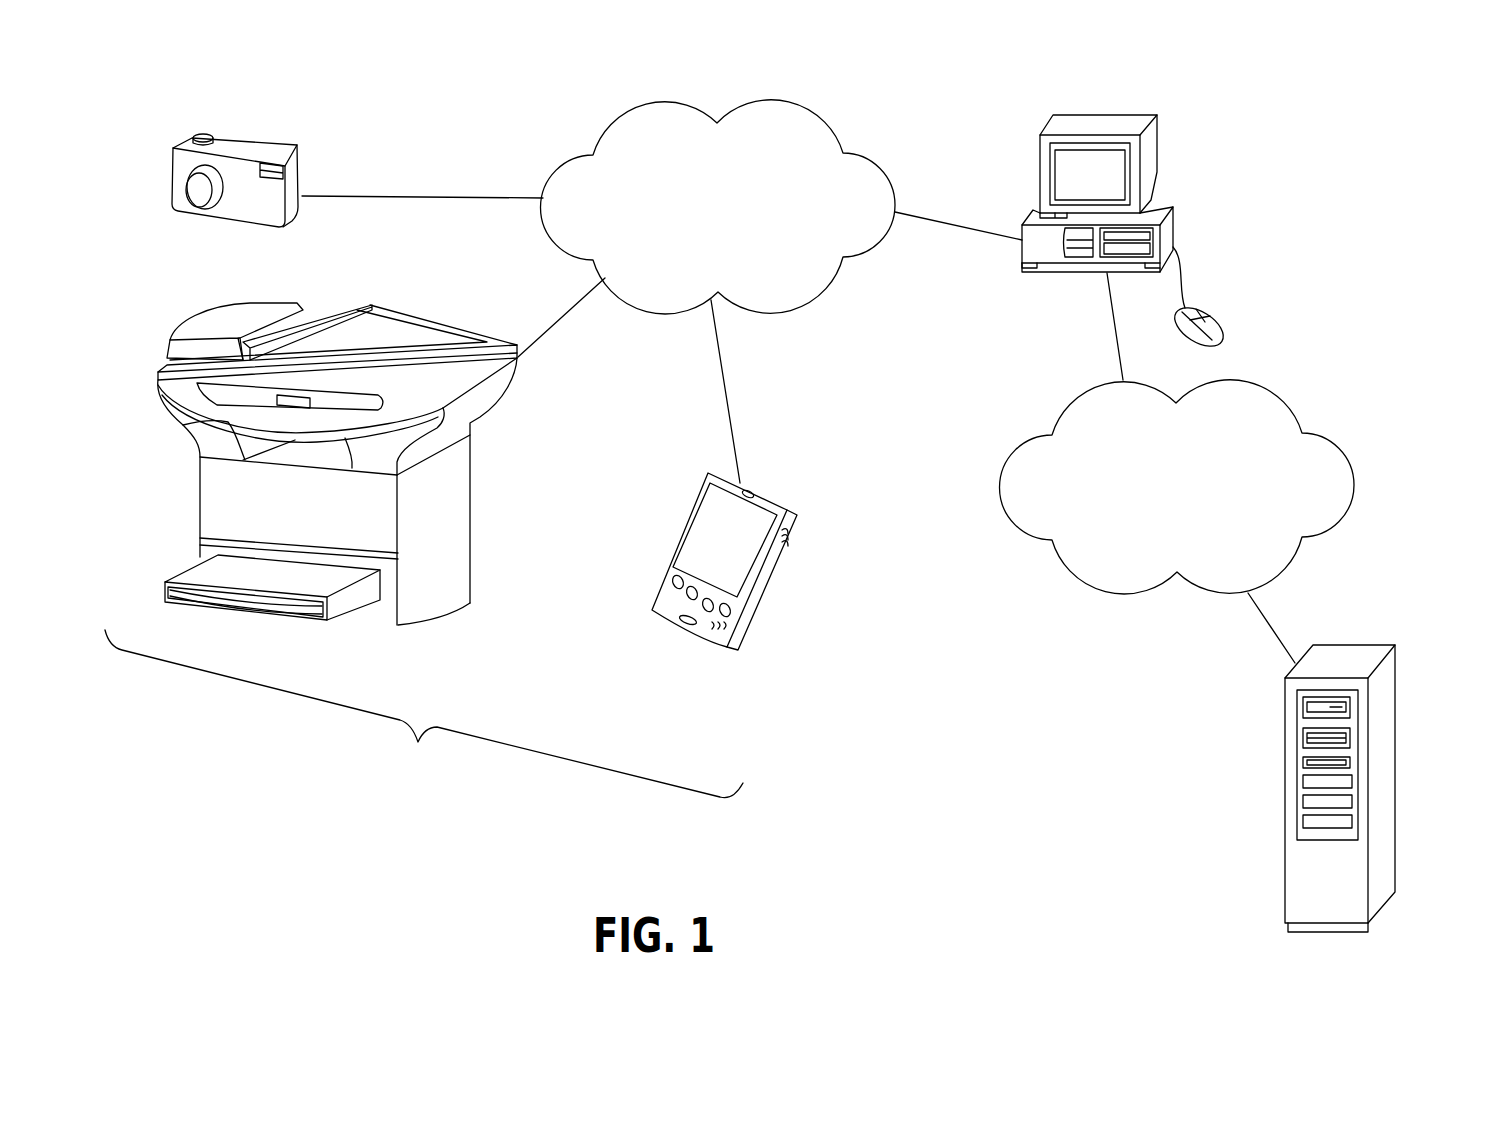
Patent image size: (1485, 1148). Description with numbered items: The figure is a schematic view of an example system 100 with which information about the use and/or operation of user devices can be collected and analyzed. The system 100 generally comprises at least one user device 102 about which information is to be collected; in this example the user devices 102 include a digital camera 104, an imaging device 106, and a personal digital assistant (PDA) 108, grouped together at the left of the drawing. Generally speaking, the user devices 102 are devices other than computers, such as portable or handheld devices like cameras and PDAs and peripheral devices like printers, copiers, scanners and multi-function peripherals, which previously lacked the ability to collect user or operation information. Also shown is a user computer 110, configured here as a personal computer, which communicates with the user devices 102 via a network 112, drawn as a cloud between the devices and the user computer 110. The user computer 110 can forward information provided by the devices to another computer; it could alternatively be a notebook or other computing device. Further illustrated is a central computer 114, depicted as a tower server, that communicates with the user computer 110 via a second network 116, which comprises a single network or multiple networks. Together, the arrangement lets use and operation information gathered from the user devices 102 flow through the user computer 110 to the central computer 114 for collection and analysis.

The system 100 is at (1393, 113).
The user device 102 is at (424, 714).
The digital camera 104 is at (293, 170).
The imaging device 106 is at (455, 582).
The personal digital assistant (PDA) 108 is at (747, 630).
The user computer 110 is at (1170, 227).
The network 112 is at (770, 291).
The central computer 114 is at (1383, 878).
The network 116 is at (1176, 468).